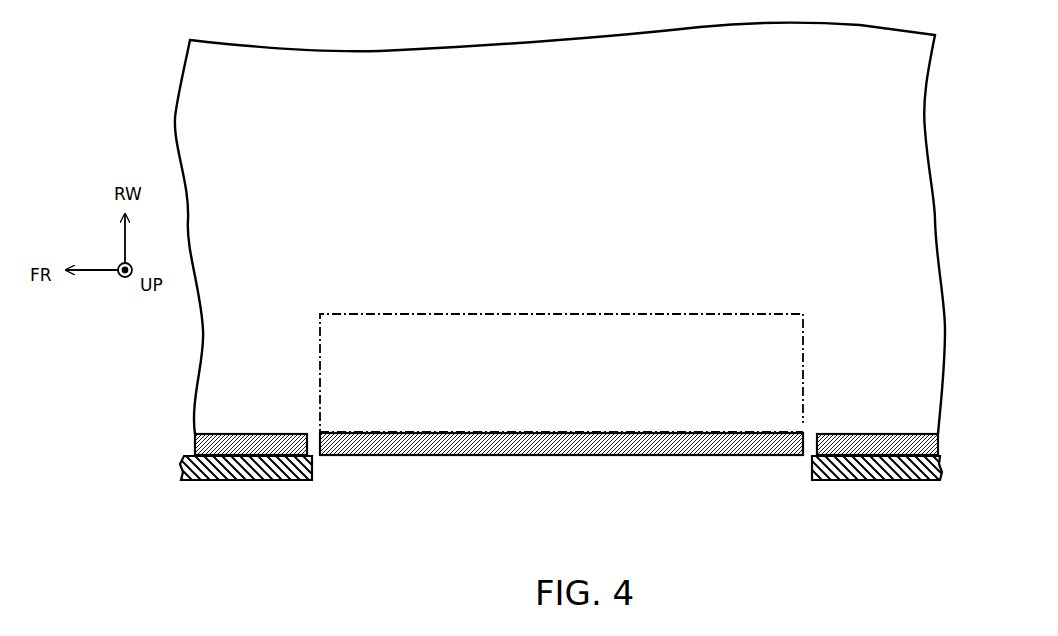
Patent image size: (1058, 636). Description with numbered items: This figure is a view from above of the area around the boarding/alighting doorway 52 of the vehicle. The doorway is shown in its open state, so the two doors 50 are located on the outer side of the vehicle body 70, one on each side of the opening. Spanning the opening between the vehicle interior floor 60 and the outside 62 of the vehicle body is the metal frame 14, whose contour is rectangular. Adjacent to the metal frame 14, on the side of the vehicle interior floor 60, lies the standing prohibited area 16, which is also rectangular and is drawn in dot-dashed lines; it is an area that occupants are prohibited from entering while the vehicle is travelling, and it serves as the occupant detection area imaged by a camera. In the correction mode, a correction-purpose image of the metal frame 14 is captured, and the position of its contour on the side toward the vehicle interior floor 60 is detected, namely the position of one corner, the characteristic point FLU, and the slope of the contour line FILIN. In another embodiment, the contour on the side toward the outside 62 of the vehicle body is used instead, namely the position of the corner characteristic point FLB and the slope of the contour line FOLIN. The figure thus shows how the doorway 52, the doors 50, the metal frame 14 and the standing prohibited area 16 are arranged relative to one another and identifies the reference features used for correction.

The vehicle interior floor 60 is at (560, 228).
The outside of the vehicle body 62 is at (566, 530).
The vehicle body 70 is at (238, 433).
The doors 50 is at (247, 466).
The metal frame 14 is at (644, 443).
The standing prohibited area 16 is at (803, 367).
The boarding/alighting doorway 52 is at (710, 489).
The contour line FILIN is at (401, 432).
The characteristic point FLU is at (317, 436).
The characteristic point FLB is at (320, 457).
The contour line FOLIN is at (413, 457).